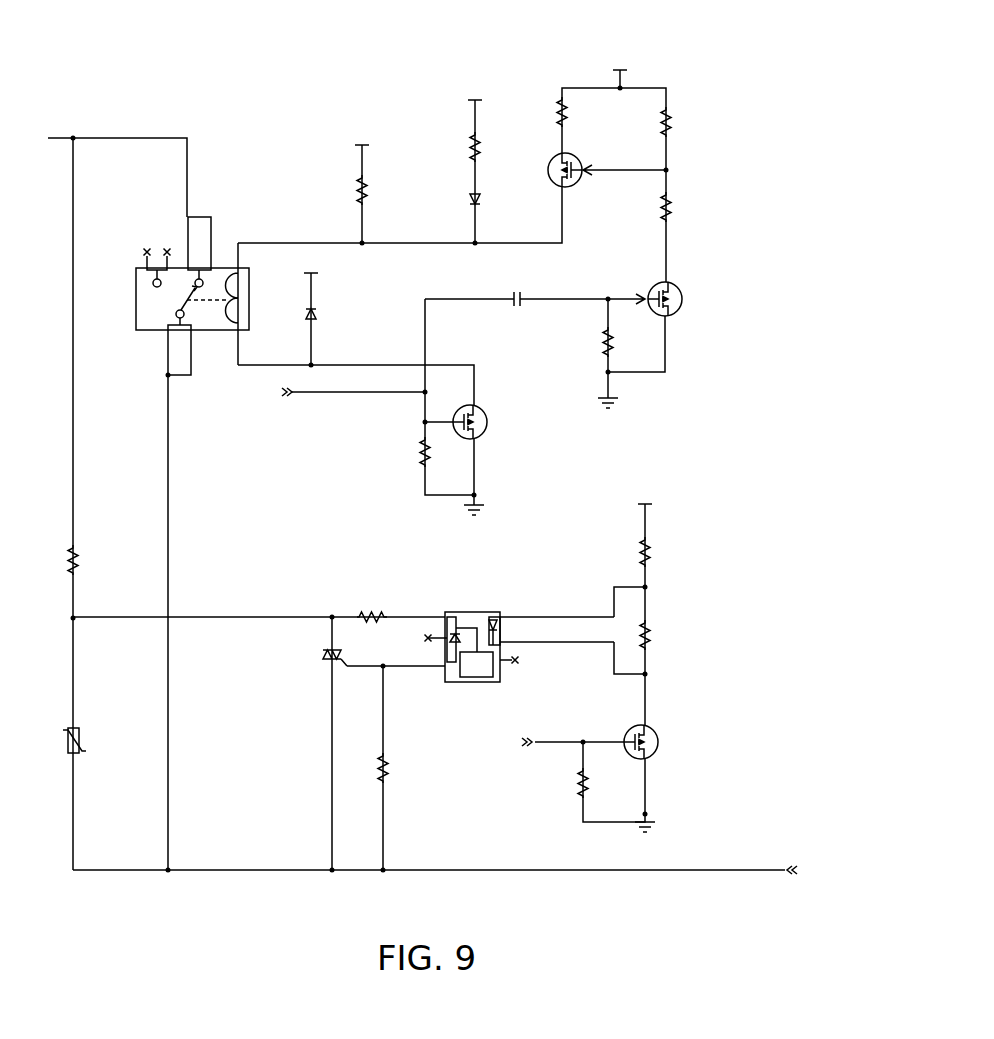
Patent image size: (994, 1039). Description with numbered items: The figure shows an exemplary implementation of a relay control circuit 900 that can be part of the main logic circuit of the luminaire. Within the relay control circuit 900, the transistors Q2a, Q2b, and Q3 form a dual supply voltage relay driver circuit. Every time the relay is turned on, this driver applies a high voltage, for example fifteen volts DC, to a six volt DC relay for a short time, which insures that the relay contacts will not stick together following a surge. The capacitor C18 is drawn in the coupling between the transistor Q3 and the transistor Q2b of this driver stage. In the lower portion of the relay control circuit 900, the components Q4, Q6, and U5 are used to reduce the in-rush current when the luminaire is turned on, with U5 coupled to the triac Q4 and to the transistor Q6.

The relay control circuit 900 is at (206, 81).
The transistor Q2a is at (579, 164).
The transistor Q2b is at (678, 305).
The transistor Q3 is at (486, 422).
The component Q4 is at (316, 655).
The component Q6 is at (655, 742).
The component U5 is at (471, 638).
The capacitor C18 is at (526, 284).